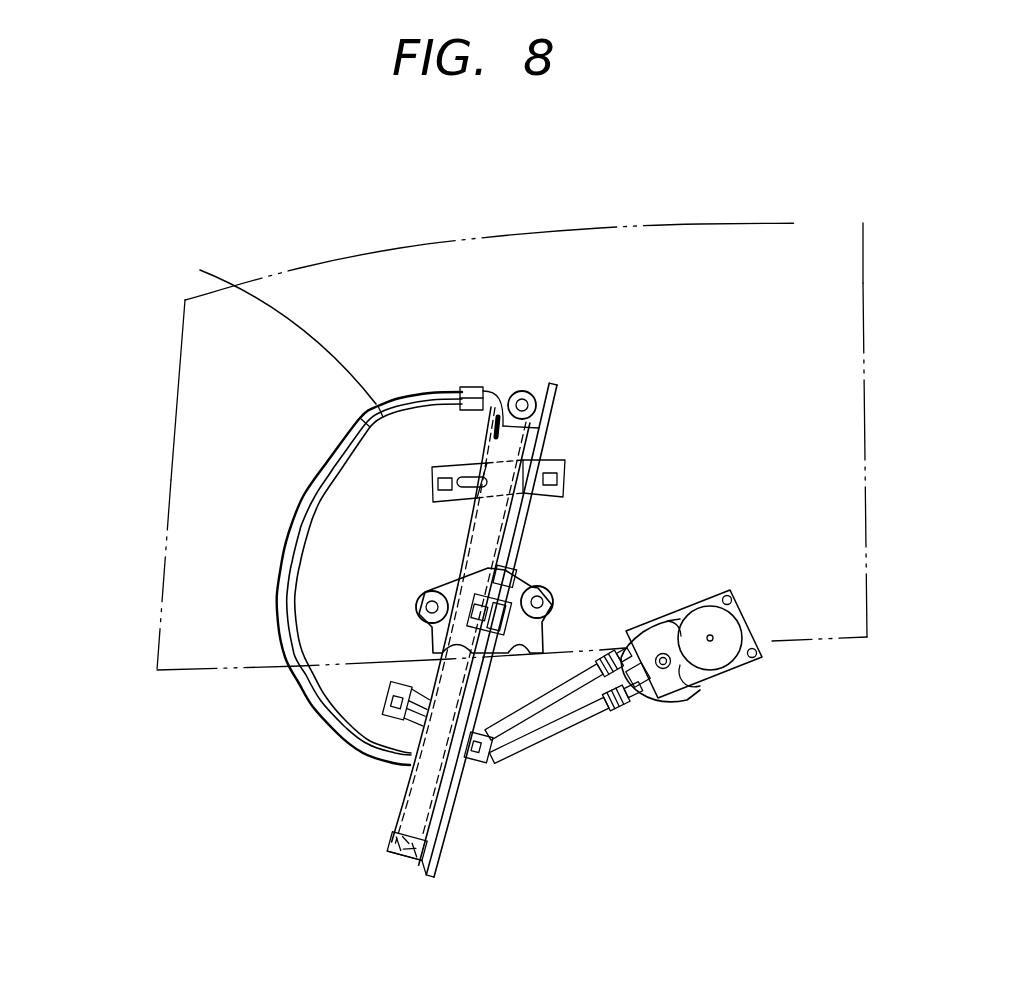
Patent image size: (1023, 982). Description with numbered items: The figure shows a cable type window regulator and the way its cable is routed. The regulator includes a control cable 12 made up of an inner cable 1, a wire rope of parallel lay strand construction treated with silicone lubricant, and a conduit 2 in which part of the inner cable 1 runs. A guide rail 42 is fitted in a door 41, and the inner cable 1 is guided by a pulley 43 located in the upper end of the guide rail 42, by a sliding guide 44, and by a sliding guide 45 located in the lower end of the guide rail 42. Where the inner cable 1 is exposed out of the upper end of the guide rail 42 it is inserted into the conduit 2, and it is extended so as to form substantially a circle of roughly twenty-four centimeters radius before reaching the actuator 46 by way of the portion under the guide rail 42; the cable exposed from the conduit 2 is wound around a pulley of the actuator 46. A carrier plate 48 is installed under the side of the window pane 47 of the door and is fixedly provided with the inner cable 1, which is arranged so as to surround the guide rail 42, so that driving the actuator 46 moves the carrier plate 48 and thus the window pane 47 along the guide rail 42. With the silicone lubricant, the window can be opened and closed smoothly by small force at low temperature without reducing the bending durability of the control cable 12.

The inner cable 1 is at (507, 525).
The conduit 2 is at (200, 270).
The control cable 12 is at (406, 395).
The door 41 is at (546, 533).
The guide rail 42 is at (442, 807).
The pulley 43 is at (523, 393).
The sliding guide 44 is at (473, 388).
The sliding guide 45 is at (397, 860).
The actuator 46 is at (765, 673).
The window pane 47 is at (675, 238).
The carrier plate 48 is at (530, 640).